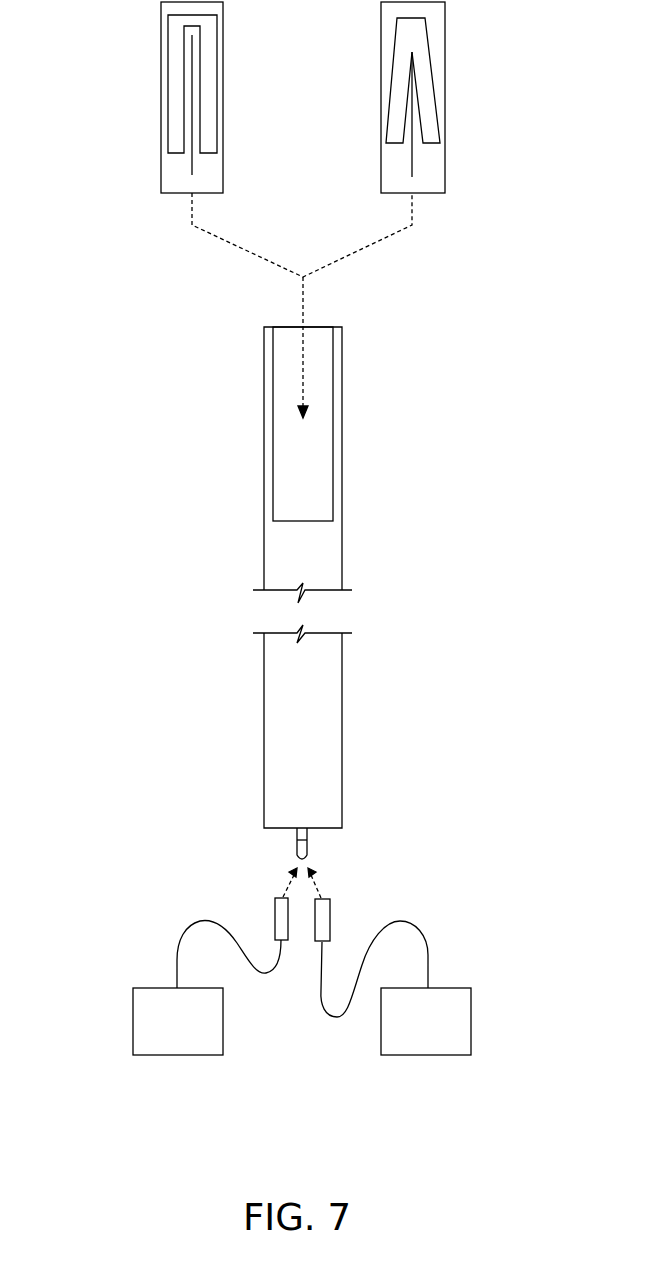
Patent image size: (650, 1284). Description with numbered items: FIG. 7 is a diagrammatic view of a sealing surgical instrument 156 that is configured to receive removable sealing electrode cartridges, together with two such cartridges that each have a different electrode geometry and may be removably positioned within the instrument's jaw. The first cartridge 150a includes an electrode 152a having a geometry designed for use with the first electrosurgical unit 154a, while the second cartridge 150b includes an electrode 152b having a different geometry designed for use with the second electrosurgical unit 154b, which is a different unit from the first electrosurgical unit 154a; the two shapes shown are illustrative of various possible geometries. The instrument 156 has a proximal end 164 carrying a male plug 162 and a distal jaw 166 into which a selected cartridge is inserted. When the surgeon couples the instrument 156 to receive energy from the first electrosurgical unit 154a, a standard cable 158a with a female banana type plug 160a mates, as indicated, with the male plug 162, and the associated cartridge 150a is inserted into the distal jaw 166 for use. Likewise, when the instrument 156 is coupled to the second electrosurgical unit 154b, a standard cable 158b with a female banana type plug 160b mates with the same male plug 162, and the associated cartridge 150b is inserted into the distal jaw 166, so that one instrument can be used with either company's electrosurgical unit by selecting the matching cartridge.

The cartridge 150a is at (160, 180).
The cartridge 150b is at (447, 175).
The electrode 152a is at (177, 95).
The electrode 152b is at (427, 93).
The ESU-1 154a is at (180, 1057).
The ESU-2 154b is at (432, 1057).
The surgical instrument 156 is at (124, 551).
The cable 158a is at (185, 929).
The cable 158b is at (425, 946).
The female banana type plug 160a is at (274, 910).
The female banana type plug 160b is at (332, 912).
The male plug 162 is at (296, 853).
The proximal end 164 is at (343, 788).
The distal jaw 166 is at (345, 350).